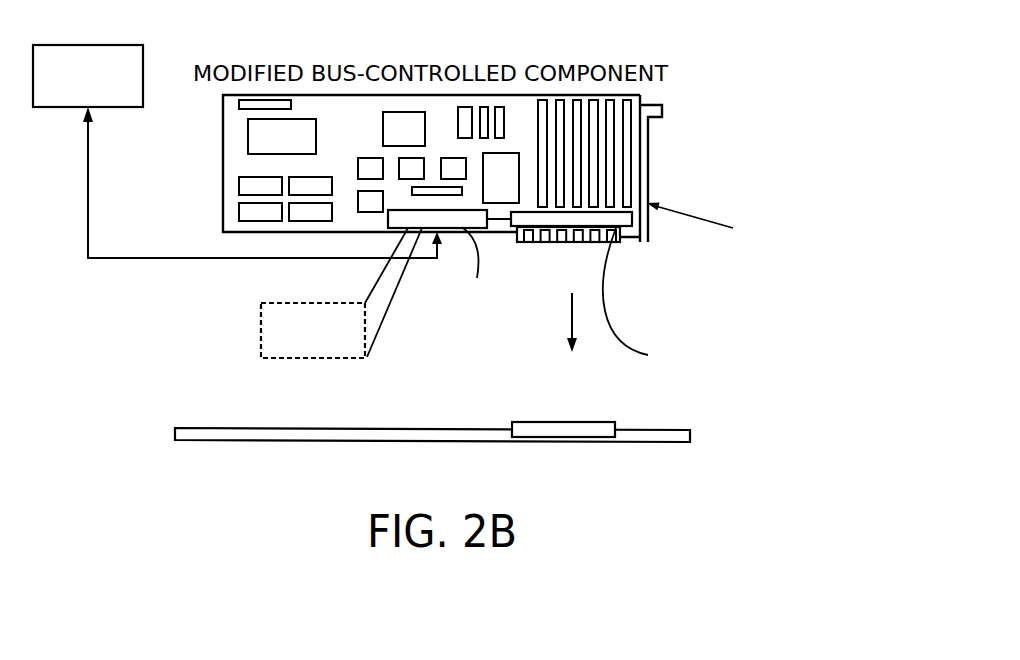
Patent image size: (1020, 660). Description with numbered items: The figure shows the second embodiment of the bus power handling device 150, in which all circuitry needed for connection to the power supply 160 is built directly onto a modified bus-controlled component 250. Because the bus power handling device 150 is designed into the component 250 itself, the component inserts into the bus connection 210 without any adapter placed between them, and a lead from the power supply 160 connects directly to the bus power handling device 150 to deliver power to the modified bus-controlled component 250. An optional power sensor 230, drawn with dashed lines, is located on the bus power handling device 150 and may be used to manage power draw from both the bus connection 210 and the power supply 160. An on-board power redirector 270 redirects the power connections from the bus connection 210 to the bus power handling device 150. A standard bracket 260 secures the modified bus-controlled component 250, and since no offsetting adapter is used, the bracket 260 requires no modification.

The power supply 160 is at (40, 46).
The modified bus-controlled component 250 is at (227, 144).
The standard bracket 260 is at (650, 172).
The bus power handling device 150 is at (477, 370).
The on-board power redirector 270 is at (757, 392).
The power sensor 230 is at (272, 357).
The bus connection 210 is at (185, 437).